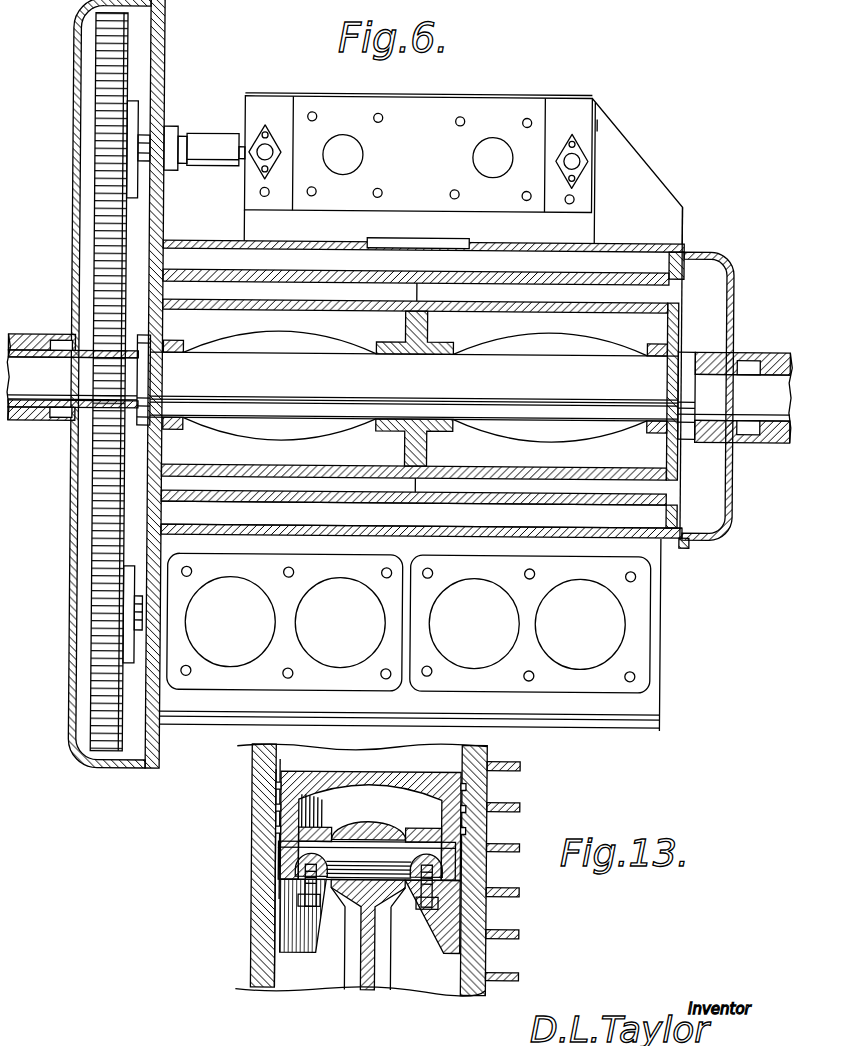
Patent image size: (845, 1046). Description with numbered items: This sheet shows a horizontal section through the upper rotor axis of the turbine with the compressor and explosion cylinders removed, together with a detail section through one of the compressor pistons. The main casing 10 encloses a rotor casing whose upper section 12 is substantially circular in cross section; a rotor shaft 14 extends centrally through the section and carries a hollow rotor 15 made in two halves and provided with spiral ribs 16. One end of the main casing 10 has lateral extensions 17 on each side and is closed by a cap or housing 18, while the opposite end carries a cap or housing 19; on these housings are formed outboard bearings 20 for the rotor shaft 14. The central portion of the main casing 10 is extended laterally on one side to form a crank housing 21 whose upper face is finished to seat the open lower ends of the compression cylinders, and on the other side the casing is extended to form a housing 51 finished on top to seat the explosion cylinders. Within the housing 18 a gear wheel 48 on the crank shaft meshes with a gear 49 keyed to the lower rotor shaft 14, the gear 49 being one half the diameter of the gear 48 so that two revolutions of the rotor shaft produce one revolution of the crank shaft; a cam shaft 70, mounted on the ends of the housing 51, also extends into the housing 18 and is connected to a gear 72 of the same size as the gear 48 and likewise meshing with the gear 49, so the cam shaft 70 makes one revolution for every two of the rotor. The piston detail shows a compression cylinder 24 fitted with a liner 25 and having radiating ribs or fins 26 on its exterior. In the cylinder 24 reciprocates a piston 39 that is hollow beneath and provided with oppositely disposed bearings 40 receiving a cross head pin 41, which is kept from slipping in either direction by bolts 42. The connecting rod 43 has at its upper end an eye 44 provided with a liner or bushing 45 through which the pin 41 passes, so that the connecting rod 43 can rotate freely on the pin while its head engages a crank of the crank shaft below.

In FIG. 6, the main casing 10 is at (637, 540).
In FIG. 6, the upper rotor casing section 12 is at (457, 503).
In FIG. 6, the rotor shaft 14 is at (399, 393).
In FIG. 6, the hollow rotor 15 is at (288, 465).
In FIG. 6, the spiral ribs 16 is at (283, 287).
In FIG. 6, the lateral extensions 17 is at (157, 93).
In FIG. 6, the cap or housing 18 is at (72, 633).
In FIG. 6, the cap or housing 19 is at (730, 508).
In FIG. 6, the outboard bearings 20 is at (780, 443).
In FIG. 6, the crank housing 21 is at (640, 698).
In FIG. 6, the gear wheel 48 is at (105, 568).
In FIG. 6, the gear 49 is at (102, 452).
In FIG. 6, the housing 51 is at (578, 122).
In FIG. 6, the cam shaft 70 is at (243, 100).
In FIG. 6, the gear 72 is at (93, 103).
In FIG. 13, the compression cylinders 24 is at (487, 913).
In FIG. 13, the liners 25 is at (295, 985).
In FIG. 13, the radiating ribs or fins 26 is at (518, 803).
In FIG. 13, the piston 39 is at (255, 777).
In FIG. 13, the bearings 40 is at (320, 836).
In FIG. 13, the cross head pin 41 is at (300, 855).
In FIG. 13, the bolts 42 is at (312, 887).
In FIG. 13, the connecting rod 43 is at (372, 988).
In FIG. 13, the eye 44 is at (397, 830).
In FIG. 13, the liner or bushing 45 is at (355, 830).